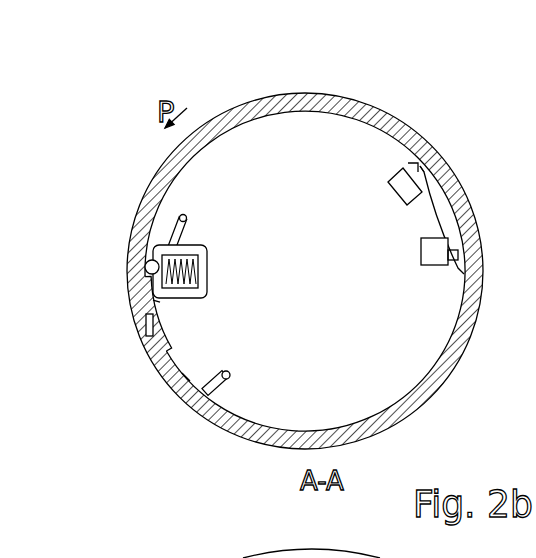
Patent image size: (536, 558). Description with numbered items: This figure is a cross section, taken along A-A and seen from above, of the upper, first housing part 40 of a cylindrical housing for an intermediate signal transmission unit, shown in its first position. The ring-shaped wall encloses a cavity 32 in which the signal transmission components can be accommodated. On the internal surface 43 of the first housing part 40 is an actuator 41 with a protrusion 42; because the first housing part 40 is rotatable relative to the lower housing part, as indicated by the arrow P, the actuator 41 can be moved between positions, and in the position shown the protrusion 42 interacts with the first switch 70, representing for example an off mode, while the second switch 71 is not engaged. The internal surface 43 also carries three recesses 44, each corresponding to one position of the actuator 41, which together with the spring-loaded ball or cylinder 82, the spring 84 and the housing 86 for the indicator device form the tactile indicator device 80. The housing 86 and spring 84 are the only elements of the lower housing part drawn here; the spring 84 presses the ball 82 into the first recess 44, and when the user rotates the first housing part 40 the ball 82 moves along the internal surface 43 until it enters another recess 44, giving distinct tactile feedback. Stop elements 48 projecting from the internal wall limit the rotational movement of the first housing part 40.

The cavity 32 is at (303, 147).
The first housing part 40 is at (231, 107).
The actuator 41 is at (419, 163).
The protrusion 42 is at (419, 163).
The internal surface 43 is at (153, 300).
The recesses 44 is at (143, 283).
The stop elements 48 is at (181, 218).
The first switch 70 is at (406, 190).
The second switch 71 is at (430, 258).
The tactile indicator device 80 is at (155, 256).
The spring loaded ball or cylinder 82 is at (150, 267).
The spring 84 is at (185, 262).
The housing for the indicator device 86 is at (208, 273).